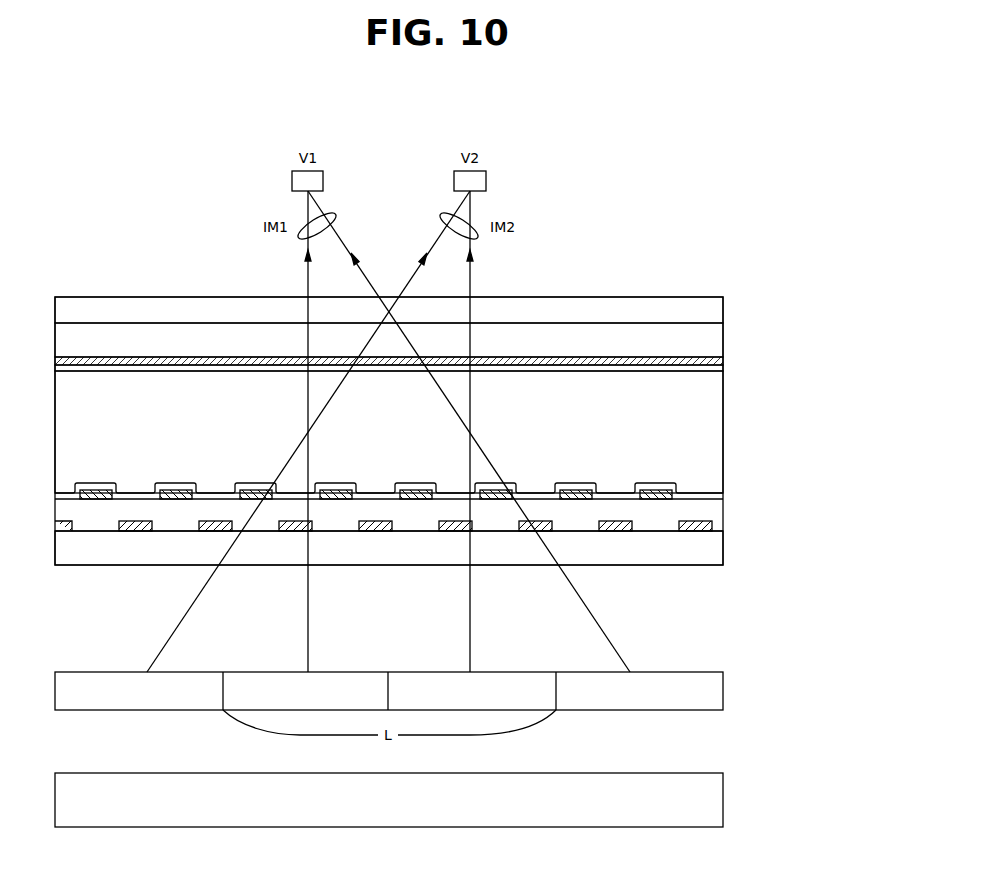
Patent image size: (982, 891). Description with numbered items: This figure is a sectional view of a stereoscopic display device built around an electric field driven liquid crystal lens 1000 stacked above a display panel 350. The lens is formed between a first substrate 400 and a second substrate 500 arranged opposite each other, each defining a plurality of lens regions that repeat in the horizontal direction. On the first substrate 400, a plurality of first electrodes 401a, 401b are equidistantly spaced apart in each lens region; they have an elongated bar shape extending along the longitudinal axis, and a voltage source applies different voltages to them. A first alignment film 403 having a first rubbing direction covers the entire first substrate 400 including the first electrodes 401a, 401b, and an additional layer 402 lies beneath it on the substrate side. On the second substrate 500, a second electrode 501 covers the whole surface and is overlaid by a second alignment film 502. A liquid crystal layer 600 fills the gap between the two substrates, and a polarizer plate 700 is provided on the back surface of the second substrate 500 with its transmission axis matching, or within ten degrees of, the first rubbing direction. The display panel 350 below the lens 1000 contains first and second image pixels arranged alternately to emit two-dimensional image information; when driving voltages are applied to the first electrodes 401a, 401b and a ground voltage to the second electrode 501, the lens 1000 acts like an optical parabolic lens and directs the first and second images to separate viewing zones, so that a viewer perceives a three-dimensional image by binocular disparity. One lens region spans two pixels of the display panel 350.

The electric field driven liquid crystal lens 1000 is at (452, 562).
The polarizer plate 700 is at (723, 313).
The second substrate 500 is at (723, 340).
The second electrode 501 is at (723, 361).
The second alignment film 502 is at (723, 368).
The liquid crystal layer 600 is at (723, 432).
The first alignment film 403 is at (420, 541).
The insulating layer with electrodes 402 is at (420, 562).
The first electrode 401a is at (617, 531).
The first electrode 401b is at (660, 499).
The first substrate 400 is at (420, 549).
The display panel 350 is at (723, 692).